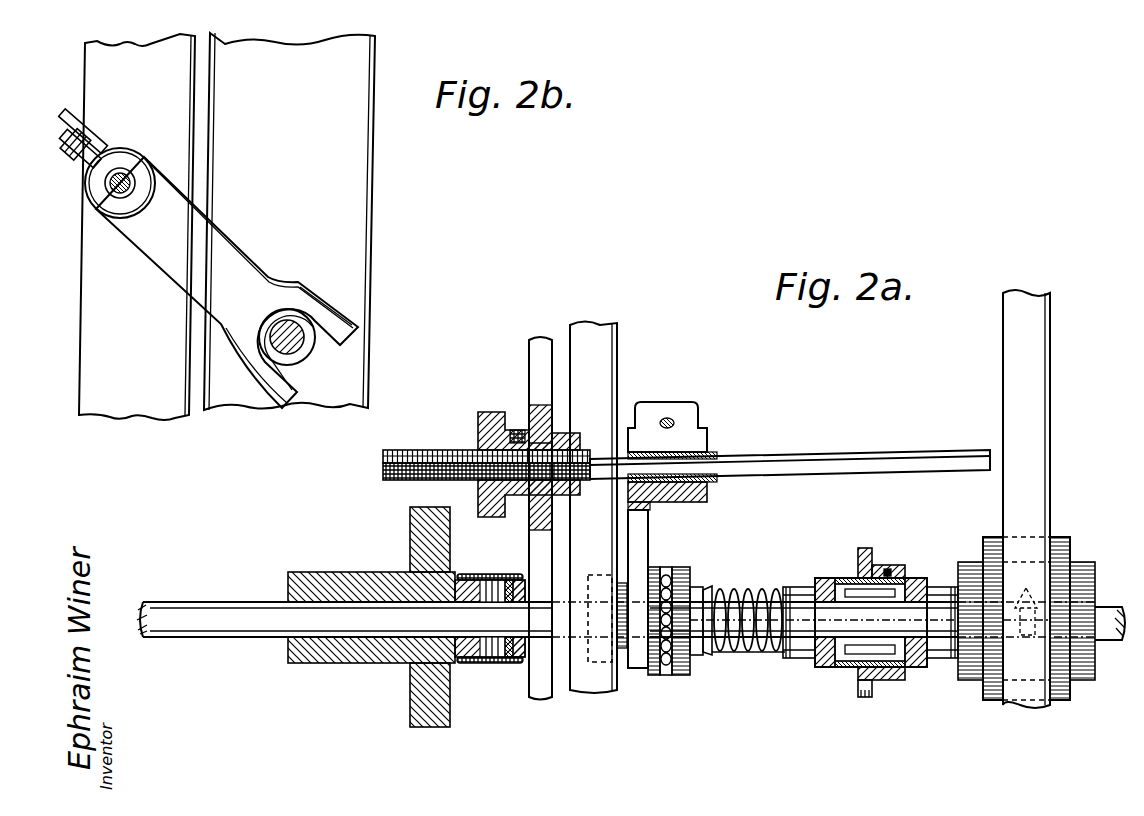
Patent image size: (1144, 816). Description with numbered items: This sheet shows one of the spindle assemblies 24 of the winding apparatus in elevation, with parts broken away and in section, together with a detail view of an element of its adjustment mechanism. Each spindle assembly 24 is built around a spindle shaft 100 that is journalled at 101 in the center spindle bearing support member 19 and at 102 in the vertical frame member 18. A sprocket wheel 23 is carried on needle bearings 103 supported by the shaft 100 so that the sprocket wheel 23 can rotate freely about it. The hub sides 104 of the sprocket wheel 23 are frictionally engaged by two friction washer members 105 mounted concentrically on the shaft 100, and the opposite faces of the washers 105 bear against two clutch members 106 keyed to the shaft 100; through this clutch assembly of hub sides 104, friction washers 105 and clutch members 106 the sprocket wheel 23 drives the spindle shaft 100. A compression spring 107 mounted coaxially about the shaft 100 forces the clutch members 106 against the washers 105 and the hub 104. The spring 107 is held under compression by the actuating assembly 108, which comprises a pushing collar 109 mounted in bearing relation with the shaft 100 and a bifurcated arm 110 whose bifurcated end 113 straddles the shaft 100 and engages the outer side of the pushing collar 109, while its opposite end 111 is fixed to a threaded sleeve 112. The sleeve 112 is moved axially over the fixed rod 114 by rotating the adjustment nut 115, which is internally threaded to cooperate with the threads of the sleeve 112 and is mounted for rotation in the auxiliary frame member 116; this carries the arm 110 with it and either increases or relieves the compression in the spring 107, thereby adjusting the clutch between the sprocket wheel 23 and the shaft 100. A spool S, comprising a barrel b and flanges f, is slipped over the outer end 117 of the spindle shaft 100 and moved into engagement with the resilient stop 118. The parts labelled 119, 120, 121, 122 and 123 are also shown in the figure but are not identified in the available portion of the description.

In FIG. 2A, the vertical frame member 18 is at (598, 508).
In FIG. 2A, the center spindle bearing support member 19 is at (1026, 499).
In FIG. 2A, the sprocket wheel 23 is at (866, 562).
In FIG. 2A, the spindle assembly 24 is at (737, 590).
In FIG. 2B, the spindle shaft 100 is at (300, 343).
In FIG. 2A, the spindle shaft 100 is at (1104, 607).
In FIG. 2A, the journal in center spindle bearing support member 101 is at (1028, 603).
In FIG. 2A, the journal in vertical frame member 102 is at (600, 662).
In FIG. 2A, the needle bearings 103 is at (878, 648).
In FIG. 2A, the hub sides of sprocket wheel 104 is at (912, 580).
In FIG. 2A, the friction washer members 105 is at (813, 663).
In FIG. 2A, the clutch members 106 is at (798, 588).
In FIG. 2A, the compression spring 107 is at (741, 648).
In FIG. 2A, the actuating assembly 108 is at (664, 517).
In FIG. 2A, the pushing collar 109 is at (709, 592).
In FIG. 2B, the bifurcated arm 110 is at (203, 247).
In FIG. 2A, the bifurcated arm 110 is at (640, 566).
In FIG. 2B, the opposite end of bifurcated arm 111 is at (107, 205).
In FIG. 2A, the opposite end of bifurcated arm 111 is at (692, 426).
In FIG. 2B, the threaded sleeve 112 is at (107, 190).
In FIG. 2A, the threaded sleeve 112 is at (718, 453).
In FIG. 2B, the bifurcated end of arm 113 is at (306, 288).
In FIG. 2B, the fixed rod 114 is at (125, 172).
In FIG. 2A, the fixed rod 114 is at (830, 468).
In FIG. 2A, the adjustment nut 115 is at (478, 418).
In FIG. 2A, the auxiliary frame member 116 is at (535, 357).
In FIG. 2A, the outer end of spindle shaft 117 is at (205, 608).
In FIG. 2A, the resilient stop 118 is at (497, 666).
In FIG. 2A, the bearing 119 is at (467, 662).
In FIG. 2A, the bearing 120 is at (498, 580).
In FIG. 2A, the bearing ring 121 is at (514, 665).
In FIG. 2A, the bearing cap 122 is at (512, 574).
In FIG. 2A, the bearing ring 123 is at (518, 663).
In FIG. 2A, the barrel b is at (358, 574).
In FIG. 2A, the flanges f is at (410, 514).
In FIG. 2A, the spool S is at (362, 665).